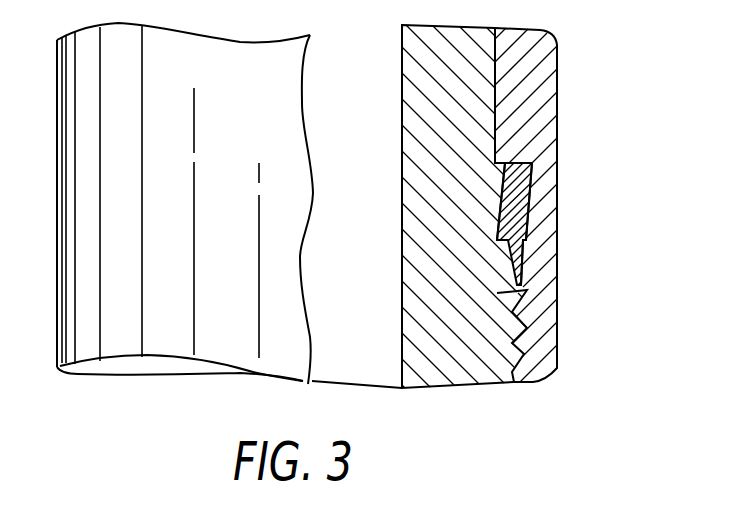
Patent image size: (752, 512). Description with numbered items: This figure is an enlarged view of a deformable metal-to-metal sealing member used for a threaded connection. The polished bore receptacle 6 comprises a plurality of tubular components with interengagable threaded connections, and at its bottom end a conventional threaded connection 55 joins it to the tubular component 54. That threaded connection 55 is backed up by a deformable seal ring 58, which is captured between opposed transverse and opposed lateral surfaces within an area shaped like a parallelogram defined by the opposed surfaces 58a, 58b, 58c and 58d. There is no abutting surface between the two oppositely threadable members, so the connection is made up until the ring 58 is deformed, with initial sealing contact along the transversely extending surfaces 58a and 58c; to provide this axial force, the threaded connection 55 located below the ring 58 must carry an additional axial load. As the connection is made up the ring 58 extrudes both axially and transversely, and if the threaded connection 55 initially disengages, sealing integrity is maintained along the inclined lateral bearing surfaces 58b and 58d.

The polished bore receptacle 6 is at (553, 87).
The tubular component 54 is at (527, 290).
The threaded connection 55 is at (550, 335).
The seal ring 58 is at (527, 200).
The transversely extending surface 58a is at (524, 163).
The inclined lateral bearing surface 58b is at (529, 184).
The transversely extending surface 58c is at (523, 256).
The inclined lateral bearing surface 58d is at (501, 200).